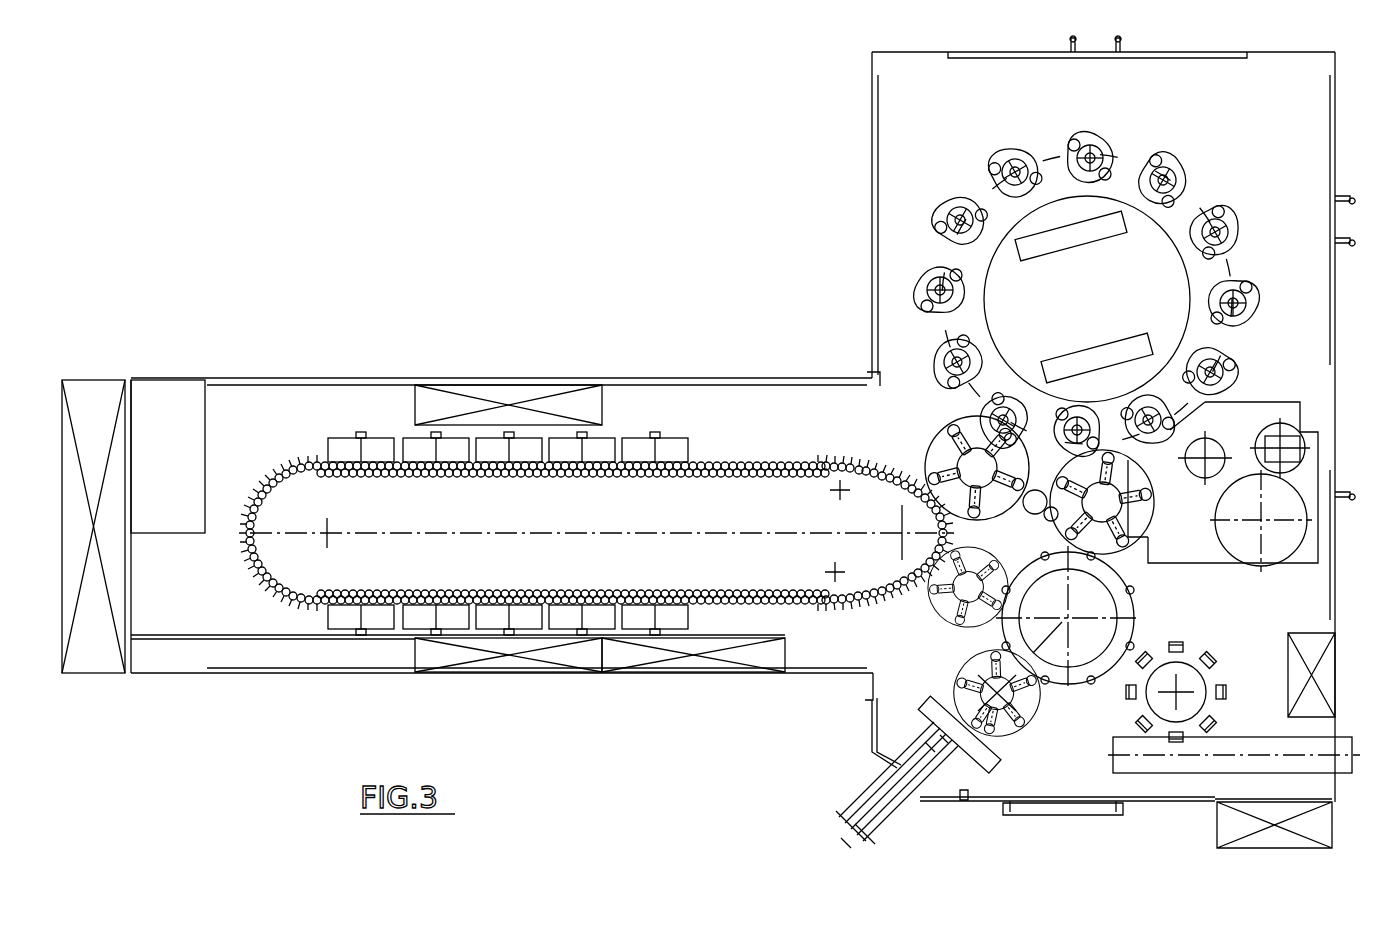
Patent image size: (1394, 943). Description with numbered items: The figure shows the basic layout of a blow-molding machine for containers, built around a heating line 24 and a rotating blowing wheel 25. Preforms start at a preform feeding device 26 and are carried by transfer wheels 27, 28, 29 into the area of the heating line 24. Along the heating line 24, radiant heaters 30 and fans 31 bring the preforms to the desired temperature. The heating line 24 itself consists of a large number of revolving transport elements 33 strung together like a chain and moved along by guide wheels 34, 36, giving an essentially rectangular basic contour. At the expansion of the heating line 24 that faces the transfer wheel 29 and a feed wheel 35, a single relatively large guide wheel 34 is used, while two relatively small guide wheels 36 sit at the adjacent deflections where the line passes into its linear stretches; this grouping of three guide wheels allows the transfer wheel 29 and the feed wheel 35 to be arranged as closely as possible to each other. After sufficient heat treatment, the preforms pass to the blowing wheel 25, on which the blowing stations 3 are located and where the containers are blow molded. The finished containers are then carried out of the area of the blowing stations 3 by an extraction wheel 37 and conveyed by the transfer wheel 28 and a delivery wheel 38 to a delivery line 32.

The blowing station 3 is at (945, 283).
The heating line 24 is at (643, 413).
The blowing wheel 25 is at (1017, 223).
The preform feeding device 26 is at (900, 785).
The transfer wheel 27 is at (1010, 738).
The transfer wheel 28 is at (1068, 648).
The transfer wheel 29 is at (938, 625).
The radiant heater 30 is at (380, 442).
The fan 31 is at (502, 392).
The delivery line 32 is at (1340, 765).
The transport element 33 is at (292, 597).
The guide wheel 34 is at (330, 535).
The feed wheel 35 is at (957, 417).
The guide wheel 36 is at (845, 488).
The extraction wheel 37 is at (1157, 522).
The delivery wheel 38 is at (1187, 705).